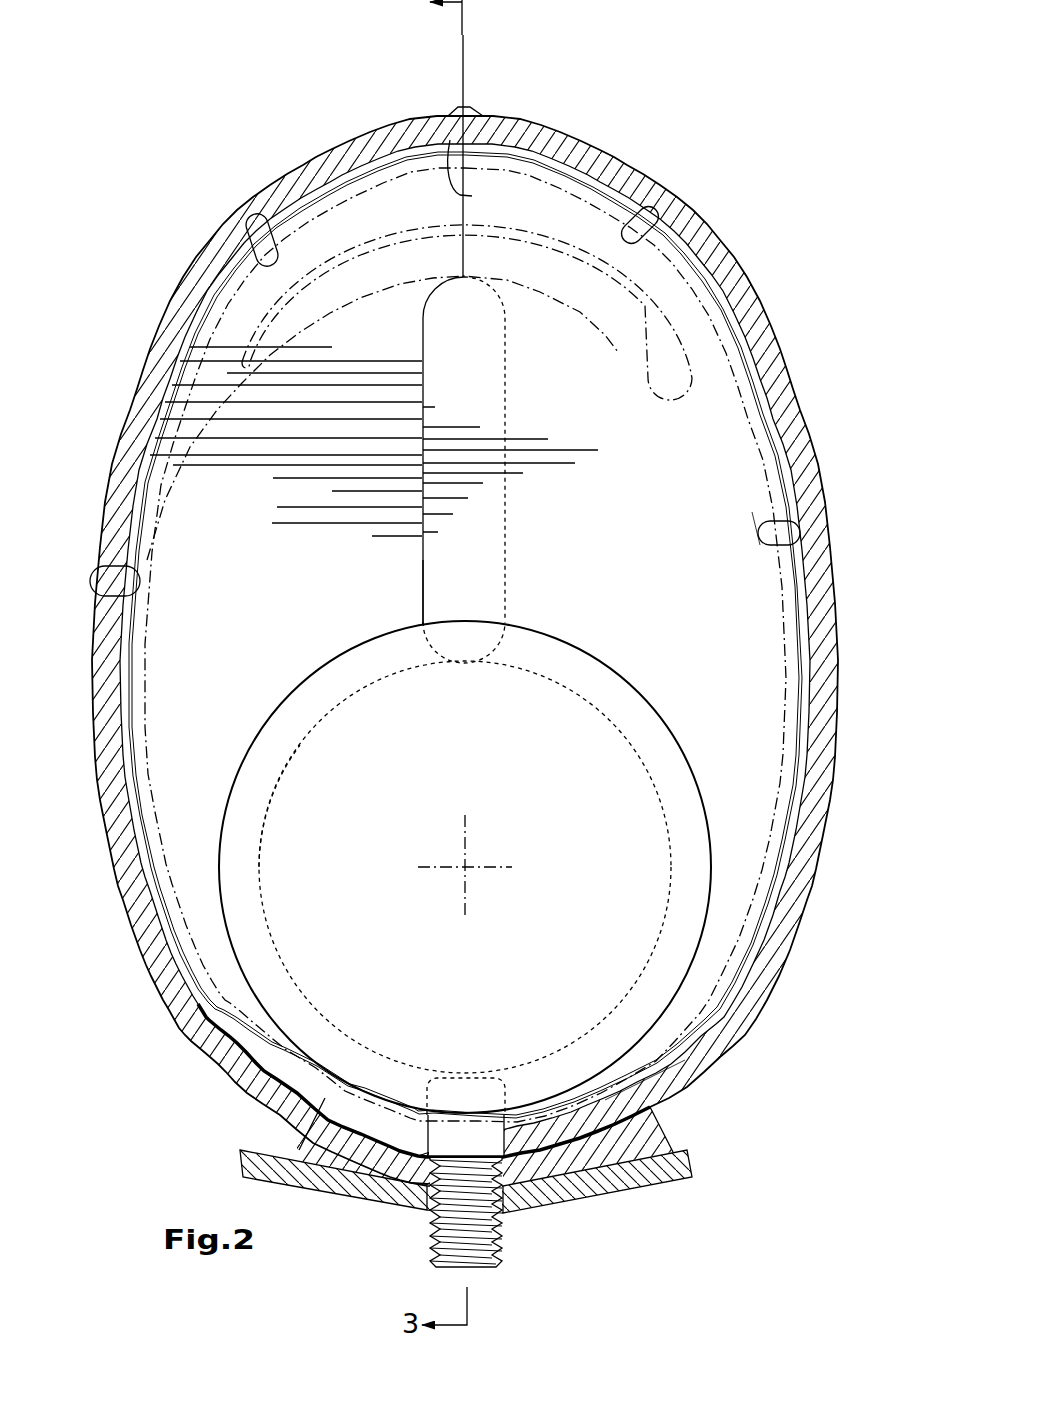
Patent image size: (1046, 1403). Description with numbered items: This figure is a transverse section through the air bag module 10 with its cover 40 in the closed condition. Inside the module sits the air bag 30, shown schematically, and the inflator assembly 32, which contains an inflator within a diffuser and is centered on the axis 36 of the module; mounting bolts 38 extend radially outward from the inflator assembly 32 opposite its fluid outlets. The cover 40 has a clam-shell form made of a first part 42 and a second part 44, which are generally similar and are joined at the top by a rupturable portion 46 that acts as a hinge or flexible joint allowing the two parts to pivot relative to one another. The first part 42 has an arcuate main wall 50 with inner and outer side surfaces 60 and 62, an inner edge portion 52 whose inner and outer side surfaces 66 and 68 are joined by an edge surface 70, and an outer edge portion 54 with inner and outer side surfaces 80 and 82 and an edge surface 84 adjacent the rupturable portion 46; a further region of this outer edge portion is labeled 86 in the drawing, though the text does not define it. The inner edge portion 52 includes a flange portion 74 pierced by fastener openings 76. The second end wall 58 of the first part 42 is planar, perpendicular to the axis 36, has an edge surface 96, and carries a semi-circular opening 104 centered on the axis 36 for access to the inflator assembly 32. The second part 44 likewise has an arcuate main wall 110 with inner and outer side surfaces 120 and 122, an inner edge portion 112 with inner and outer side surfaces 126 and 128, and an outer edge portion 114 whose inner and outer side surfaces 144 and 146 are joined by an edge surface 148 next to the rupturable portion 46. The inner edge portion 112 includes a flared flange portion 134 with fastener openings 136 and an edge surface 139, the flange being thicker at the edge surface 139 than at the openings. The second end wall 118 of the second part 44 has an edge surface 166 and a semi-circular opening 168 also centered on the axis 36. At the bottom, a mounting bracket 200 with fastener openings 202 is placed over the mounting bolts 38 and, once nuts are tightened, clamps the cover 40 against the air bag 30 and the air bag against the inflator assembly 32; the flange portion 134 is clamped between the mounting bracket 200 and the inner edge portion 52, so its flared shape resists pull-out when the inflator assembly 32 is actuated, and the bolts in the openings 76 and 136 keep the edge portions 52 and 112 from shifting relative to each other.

The air bag module 10 is at (748, 158).
The air bag 30 is at (597, 326).
The inflator assembly 32 is at (465, 863).
The axis 36 is at (466, 866).
The mounting bolts 38 is at (478, 1225).
The cover 40 is at (468, 651).
The first part of the cover 42 is at (773, 288).
The second part of the cover 44 is at (103, 372).
The rupturable portion 46 is at (457, 106).
The main wall of the first cover part 50 is at (840, 642).
The inner edge portion of the first cover part 52 is at (698, 1090).
The outer edge portion of the first cover part 54 is at (616, 138).
The second end wall of the first cover part 58 is at (470, 470).
The inner side surface of the main wall 60 is at (792, 536).
The outer side surface of the main wall 62 is at (836, 550).
The inner side surface of the inner edge portion 66 is at (665, 1067).
The outer side surface of the inner edge portion 68 is at (716, 1064).
The edge surface of the first cover part 70 is at (313, 1097).
The flange portion of the first cover part 74 is at (449, 1095).
The fastener openings 76 is at (492, 1124).
The inner side surface of the outer edge portion 80 is at (614, 225).
The outer side surface of the outer edge portion 82 is at (640, 208).
The edge surface of the outer edge portion 84 is at (458, 172).
The wall 86 is at (548, 127).
The edge surface of the second end wall 96 is at (420, 547).
The semi-circular opening 104 is at (562, 696).
The main wall of the second cover part 110 is at (96, 686).
The inner edge portion of the second cover part 112 is at (235, 1108).
The outer edge portion of the second cover part 114 is at (252, 170).
The second end wall of the second cover part 118 is at (506, 495).
The inner side surface of the main wall 120 is at (115, 578).
The outer side surface of the main wall 122 is at (103, 620).
The inner side surface of the inner edge portion 126 is at (207, 1050).
The outer side surface of the inner edge portion 128 is at (180, 1060).
The flange portion of the second cover part 134 is at (608, 1175).
The fastener openings 136 is at (498, 1205).
The edge surface of the second cover part 139 is at (668, 1126).
The inner side surface of the outer edge portion 144 is at (258, 236).
The outer side surface of the outer edge portion 146 is at (212, 244).
The edge surface of the outer edge portion 148 is at (486, 124).
The edge surface of the second end wall 166 is at (516, 562).
The semi-circular opening 168 is at (268, 792).
The mounting bracket 200 is at (466, 1202).
The fastener openings 202 is at (432, 1222).